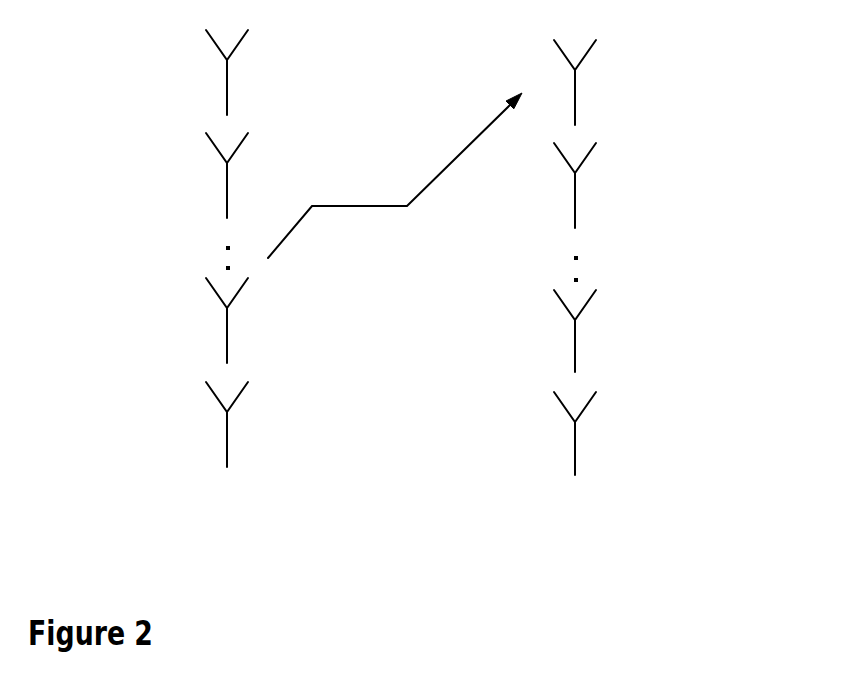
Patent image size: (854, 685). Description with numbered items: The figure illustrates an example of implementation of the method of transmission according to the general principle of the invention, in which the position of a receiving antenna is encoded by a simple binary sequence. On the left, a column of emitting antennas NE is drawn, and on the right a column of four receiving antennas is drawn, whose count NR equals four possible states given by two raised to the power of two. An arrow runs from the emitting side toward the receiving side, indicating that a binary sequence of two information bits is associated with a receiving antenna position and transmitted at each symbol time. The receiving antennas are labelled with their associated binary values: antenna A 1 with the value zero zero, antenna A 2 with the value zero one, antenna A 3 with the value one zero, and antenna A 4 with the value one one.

The receive antenna A1 (index bits 00) 1 is at (643, 72).
The receive antenna A2 (index bits 01) 2 is at (643, 185).
The receive antenna A3 (index bits 10) 3 is at (643, 331).
The receive antenna A4 (index bits 11) 4 is at (643, 433).
The N_E transmit antennas NE is at (231, 282).
The number of receiving antennas NR is at (643, 281).